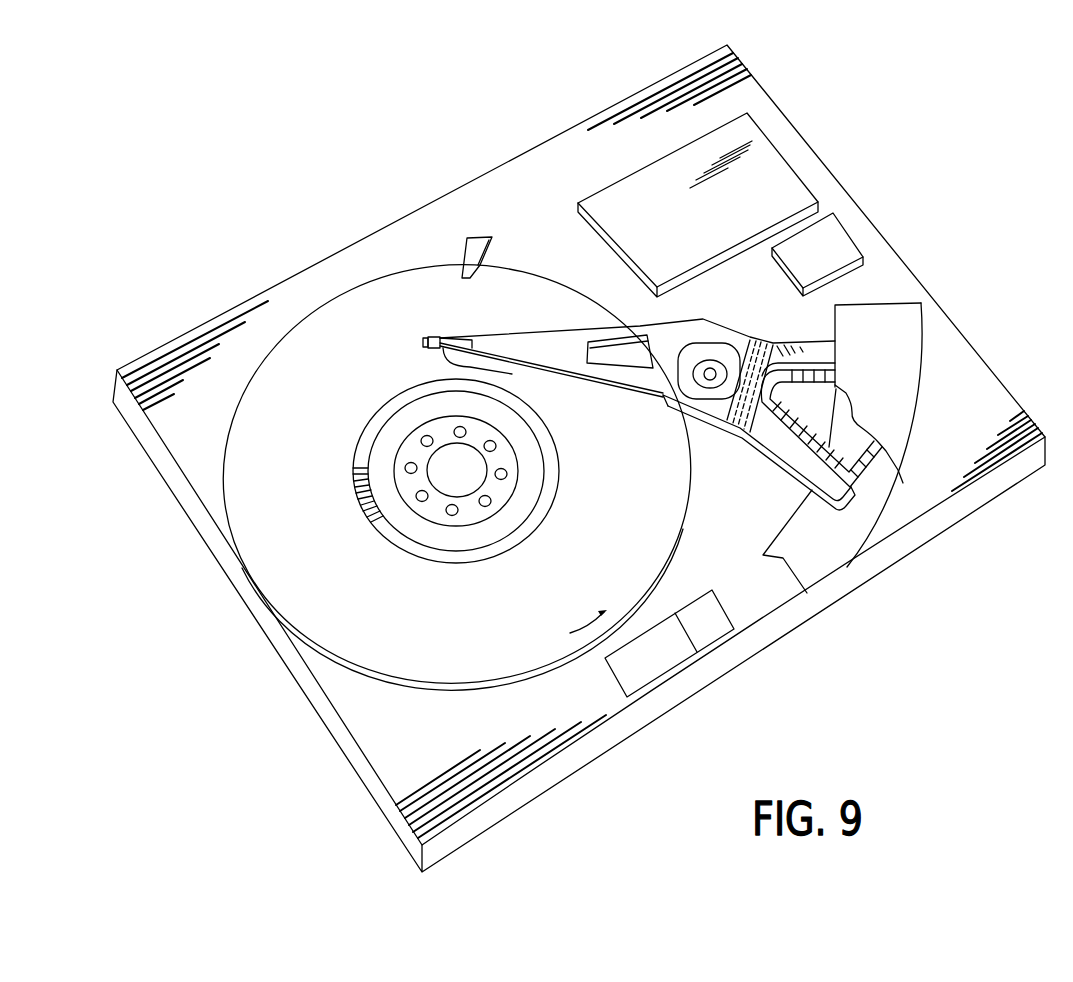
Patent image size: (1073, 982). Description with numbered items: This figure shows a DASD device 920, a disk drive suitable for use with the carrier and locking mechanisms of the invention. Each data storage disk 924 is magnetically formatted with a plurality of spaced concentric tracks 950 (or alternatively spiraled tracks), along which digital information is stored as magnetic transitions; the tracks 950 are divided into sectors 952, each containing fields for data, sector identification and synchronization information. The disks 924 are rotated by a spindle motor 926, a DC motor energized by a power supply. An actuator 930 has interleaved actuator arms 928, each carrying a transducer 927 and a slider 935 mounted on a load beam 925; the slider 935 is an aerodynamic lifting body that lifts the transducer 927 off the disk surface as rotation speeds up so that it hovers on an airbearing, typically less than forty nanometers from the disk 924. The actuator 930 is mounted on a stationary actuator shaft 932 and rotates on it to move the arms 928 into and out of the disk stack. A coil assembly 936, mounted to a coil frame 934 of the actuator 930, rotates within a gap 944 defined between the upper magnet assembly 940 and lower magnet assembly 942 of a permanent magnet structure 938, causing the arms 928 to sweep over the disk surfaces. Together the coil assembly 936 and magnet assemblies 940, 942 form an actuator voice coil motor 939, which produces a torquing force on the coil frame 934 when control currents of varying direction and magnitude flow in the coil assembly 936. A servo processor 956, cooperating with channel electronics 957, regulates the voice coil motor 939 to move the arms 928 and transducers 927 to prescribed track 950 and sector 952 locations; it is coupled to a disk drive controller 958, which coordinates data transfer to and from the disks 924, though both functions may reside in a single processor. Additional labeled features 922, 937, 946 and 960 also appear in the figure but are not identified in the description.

The DASD device 920 is at (904, 190).
The base 922 is at (732, 672).
The data storage disk 924 is at (290, 452).
The load beam 925 is at (500, 373).
The spindle motor 926 is at (470, 494).
The transducer 927 is at (420, 344).
The actuator arm 928 is at (566, 349).
The actuator 930 is at (726, 416).
The stationary actuator shaft 932 is at (710, 368).
The coil frame 934 is at (765, 342).
The slider 935 is at (424, 335).
The coil assembly 936 is at (780, 386).
The actuator assembly 937 is at (702, 427).
The permanent magnet structure 938 is at (927, 331).
The actuator voice coil motor 939 is at (806, 493).
The upper magnet assembly 940 is at (908, 382).
The lower magnet assembly 942 is at (782, 574).
The gap 944 is at (881, 471).
The circuit board 946 is at (682, 241).
The track 950 is at (368, 413).
The sector 952 is at (356, 487).
The servo processor 956 is at (650, 670).
The channel electronics 957 is at (783, 636).
The disk drive controller 958 is at (838, 264).
The ramp 960 is at (485, 236).